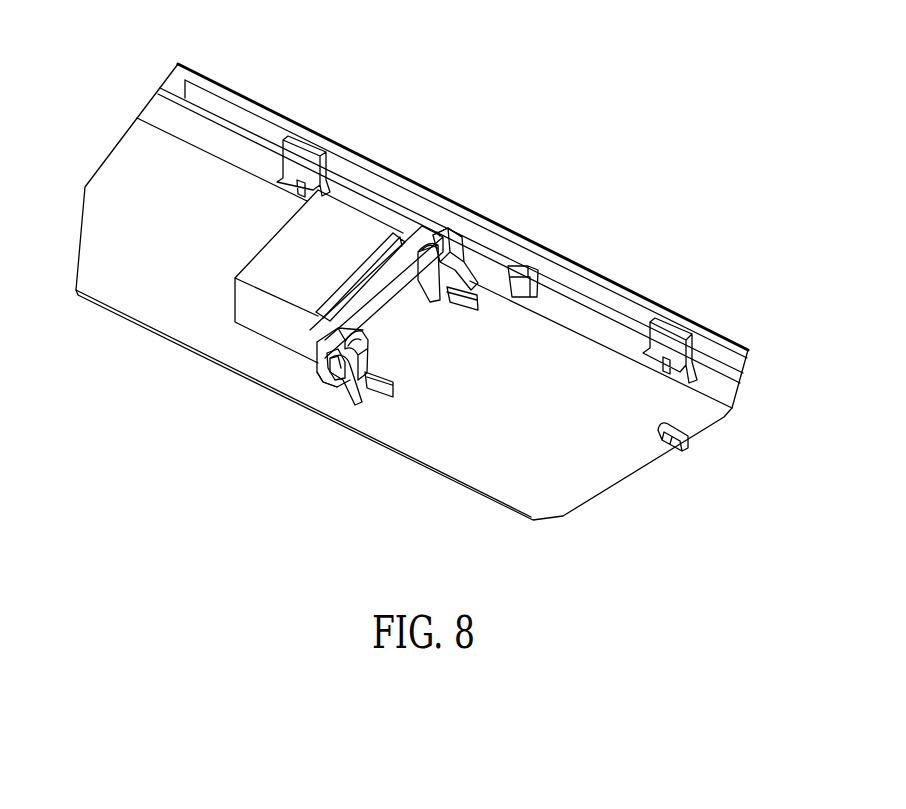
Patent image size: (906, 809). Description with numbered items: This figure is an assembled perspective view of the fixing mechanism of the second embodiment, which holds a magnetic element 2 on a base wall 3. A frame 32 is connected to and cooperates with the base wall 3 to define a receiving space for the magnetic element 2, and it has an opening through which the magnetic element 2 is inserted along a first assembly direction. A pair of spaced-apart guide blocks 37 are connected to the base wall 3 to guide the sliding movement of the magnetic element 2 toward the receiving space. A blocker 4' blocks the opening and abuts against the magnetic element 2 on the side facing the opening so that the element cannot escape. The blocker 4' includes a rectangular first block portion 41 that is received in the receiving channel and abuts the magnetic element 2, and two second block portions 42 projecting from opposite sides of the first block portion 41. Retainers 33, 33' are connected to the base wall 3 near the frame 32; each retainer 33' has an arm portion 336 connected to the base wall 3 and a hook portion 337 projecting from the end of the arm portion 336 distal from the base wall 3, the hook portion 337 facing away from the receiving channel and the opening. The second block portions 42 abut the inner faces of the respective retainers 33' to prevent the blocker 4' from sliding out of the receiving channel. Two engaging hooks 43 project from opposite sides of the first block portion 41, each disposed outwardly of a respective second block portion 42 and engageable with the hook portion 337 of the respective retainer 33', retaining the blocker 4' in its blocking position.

The magnetic element 2 is at (325, 290).
The base wall 3 is at (113, 313).
The blocker 4' is at (445, 184).
The frame 32 is at (240, 264).
The retainer 33 is at (489, 239).
The retainer 33' is at (308, 436).
The arm portion 336 is at (333, 373).
The hook portion 337 is at (320, 362).
The guide block 37 is at (473, 310).
The first block portion 41 is at (347, 300).
The second block portion 42 is at (425, 307).
The engaging hook 43 is at (457, 250).